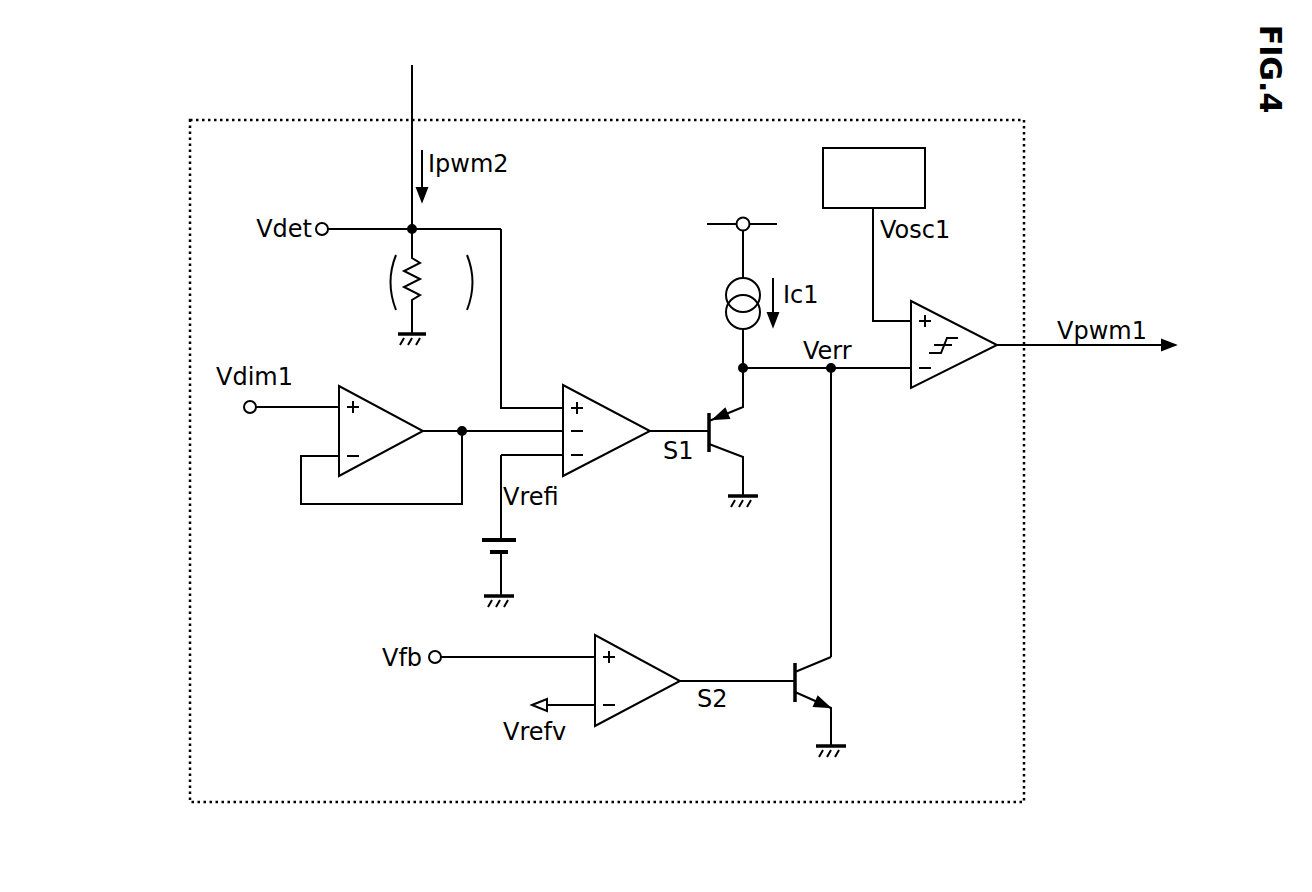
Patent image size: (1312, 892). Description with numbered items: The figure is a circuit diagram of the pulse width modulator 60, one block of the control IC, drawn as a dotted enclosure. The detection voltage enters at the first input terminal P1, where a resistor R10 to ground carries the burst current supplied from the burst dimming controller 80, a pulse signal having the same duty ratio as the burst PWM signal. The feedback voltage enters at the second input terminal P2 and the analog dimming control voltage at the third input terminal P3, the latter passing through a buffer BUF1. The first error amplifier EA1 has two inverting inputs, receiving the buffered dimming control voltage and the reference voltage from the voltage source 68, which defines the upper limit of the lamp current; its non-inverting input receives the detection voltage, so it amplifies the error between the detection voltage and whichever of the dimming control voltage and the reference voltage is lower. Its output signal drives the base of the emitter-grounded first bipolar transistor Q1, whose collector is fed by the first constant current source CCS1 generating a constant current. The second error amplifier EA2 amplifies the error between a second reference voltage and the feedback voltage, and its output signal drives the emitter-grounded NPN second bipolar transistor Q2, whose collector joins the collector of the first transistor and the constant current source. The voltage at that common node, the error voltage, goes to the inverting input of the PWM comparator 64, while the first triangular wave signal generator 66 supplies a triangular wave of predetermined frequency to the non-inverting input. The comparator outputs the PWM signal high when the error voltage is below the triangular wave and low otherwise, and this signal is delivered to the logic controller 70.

The pulse width modulator 60 is at (551, 803).
The burst dimming controller 80 is at (411, 132).
The first triangular wave signal generator 66 is at (925, 178).
The PWM comparator 64 is at (961, 318).
The logic controller 70 is at (1105, 346).
The voltage source 68 is at (482, 546).
The first input terminal P1 is at (325, 222).
The second input terminal P2 is at (437, 664).
The third input terminal P3 is at (248, 414).
The resistor R10 is at (432, 287).
The buffer BUF1 is at (386, 406).
The first error amplifier EA1 is at (612, 406).
The second error amplifier EA2 is at (643, 656).
The first bipolar transistor Q1 is at (741, 437).
The second bipolar transistor Q2 is at (832, 707).
The first constant current source CCS1 is at (730, 284).